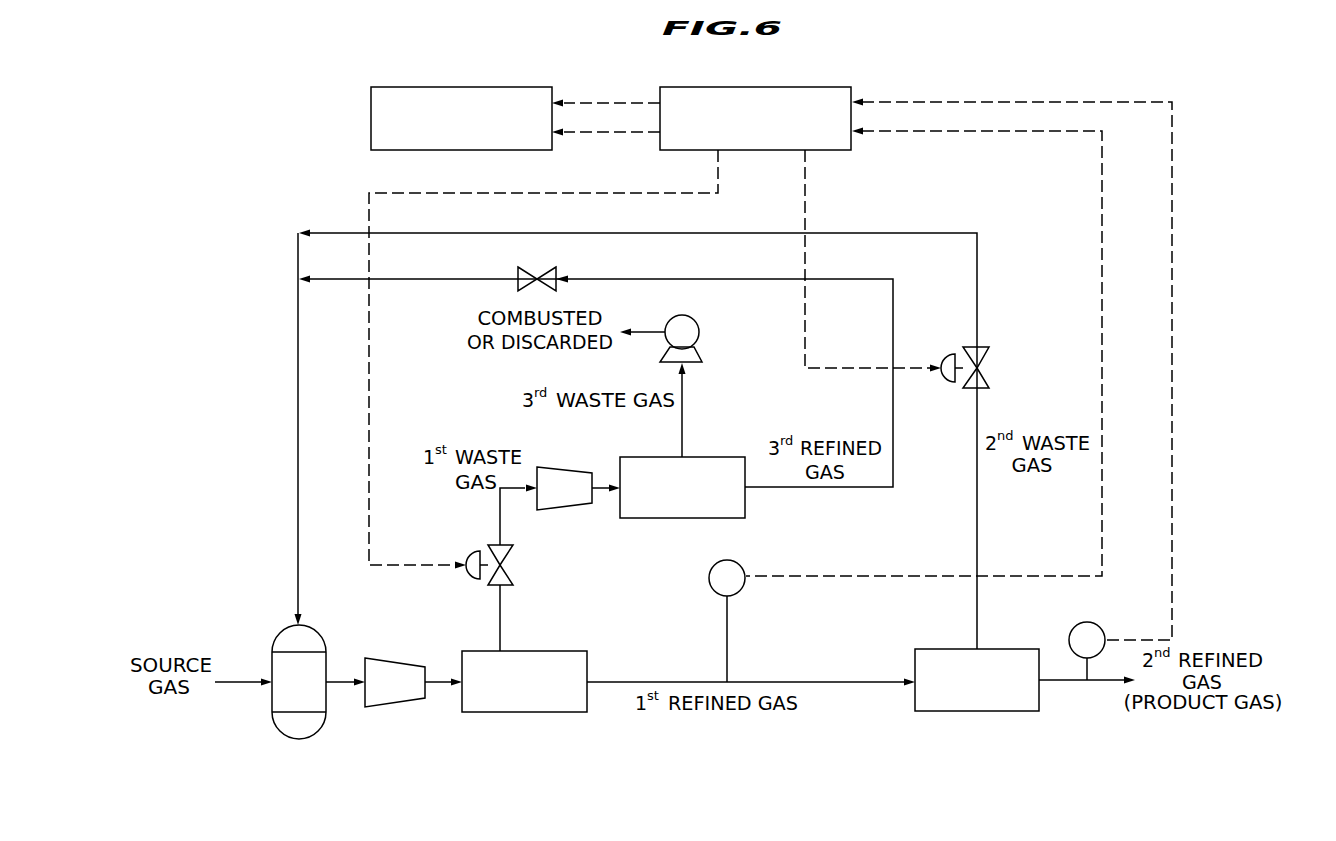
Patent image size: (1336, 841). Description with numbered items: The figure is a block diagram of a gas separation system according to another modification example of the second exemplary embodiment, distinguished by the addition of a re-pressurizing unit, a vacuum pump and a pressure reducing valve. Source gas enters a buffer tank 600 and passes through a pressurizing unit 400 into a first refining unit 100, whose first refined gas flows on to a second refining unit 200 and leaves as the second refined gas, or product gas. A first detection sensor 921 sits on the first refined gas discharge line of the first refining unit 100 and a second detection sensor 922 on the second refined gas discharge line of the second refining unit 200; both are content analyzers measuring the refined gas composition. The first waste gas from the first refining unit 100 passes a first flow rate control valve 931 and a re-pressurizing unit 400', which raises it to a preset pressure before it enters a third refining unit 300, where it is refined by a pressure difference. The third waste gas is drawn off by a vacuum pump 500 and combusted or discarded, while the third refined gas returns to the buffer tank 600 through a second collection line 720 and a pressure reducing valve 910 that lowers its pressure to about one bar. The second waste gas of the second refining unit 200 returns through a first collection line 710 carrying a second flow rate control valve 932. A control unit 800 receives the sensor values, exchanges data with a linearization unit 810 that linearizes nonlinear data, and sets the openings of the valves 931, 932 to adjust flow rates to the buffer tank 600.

The first refining unit 100 is at (575, 651).
The second refining unit 200 is at (1027, 649).
The third refining unit 300 is at (710, 457).
The pressurizing unit 400 is at (413, 663).
The re-pressurizing unit 400' is at (560, 485).
The vacuum pump 500 is at (695, 320).
The buffer tank 600 is at (317, 633).
The first collection line 710 is at (977, 252).
The second collection line 720 is at (893, 293).
The control unit 800 is at (830, 87).
The linearization unit 810 is at (532, 87).
The pressure reducing valve 910 is at (556, 270).
The first detection sensor 921 is at (755, 551).
The second detection sensor 922 is at (1111, 613).
The first flow rate control valve 931 is at (470, 550).
The second flow rate control valve 932 is at (984, 346).